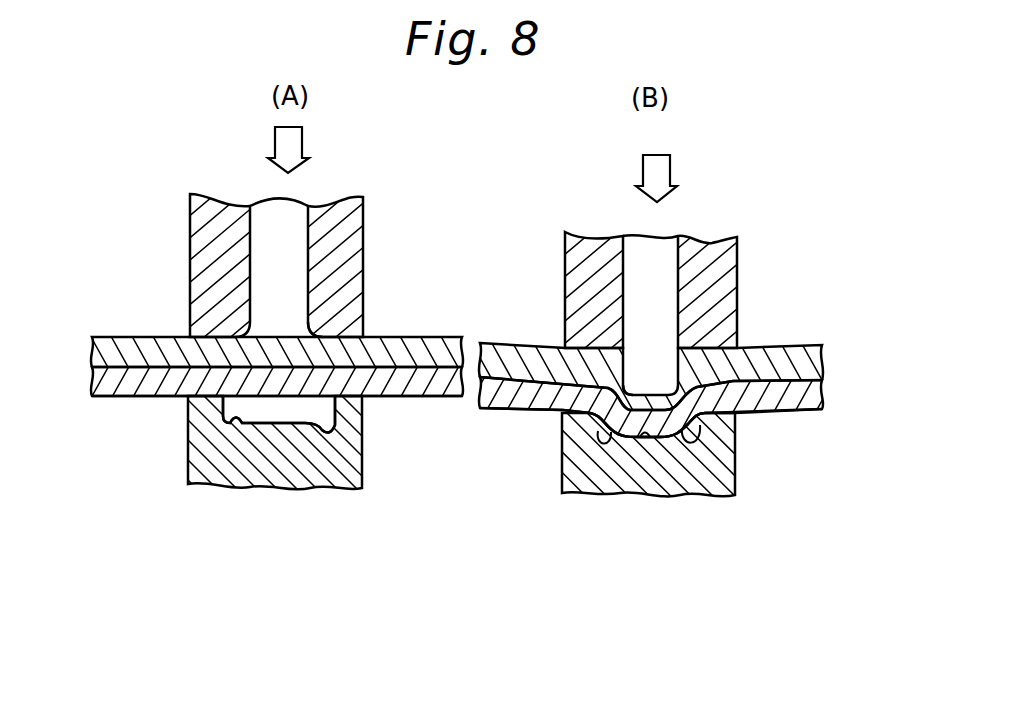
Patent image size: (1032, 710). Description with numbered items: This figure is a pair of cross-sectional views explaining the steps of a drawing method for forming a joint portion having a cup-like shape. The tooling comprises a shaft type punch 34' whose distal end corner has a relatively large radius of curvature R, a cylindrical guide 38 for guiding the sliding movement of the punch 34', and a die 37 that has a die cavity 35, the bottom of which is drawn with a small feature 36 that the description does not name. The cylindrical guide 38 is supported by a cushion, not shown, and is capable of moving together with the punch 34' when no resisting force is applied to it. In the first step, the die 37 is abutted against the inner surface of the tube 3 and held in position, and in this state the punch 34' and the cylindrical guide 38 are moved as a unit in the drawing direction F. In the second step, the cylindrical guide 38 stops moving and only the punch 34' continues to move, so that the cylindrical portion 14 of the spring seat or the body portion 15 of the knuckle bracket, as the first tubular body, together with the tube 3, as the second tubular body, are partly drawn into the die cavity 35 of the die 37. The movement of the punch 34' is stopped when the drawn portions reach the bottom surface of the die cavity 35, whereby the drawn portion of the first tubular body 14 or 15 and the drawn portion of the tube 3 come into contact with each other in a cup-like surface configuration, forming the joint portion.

The cylindrical guide 38 is at (212, 258).
The shaft type punch 34' is at (509, 193).
The drawing direction F is at (459, 164).
The cylindrical portion 14 is at (158, 347).
The body portion 15 is at (120, 308).
The tube 3 is at (160, 390).
The die 37 is at (335, 487).
The die cavity 35 is at (277, 416).
The projection 36 is at (235, 425).
The radius of curvature R is at (315, 342).